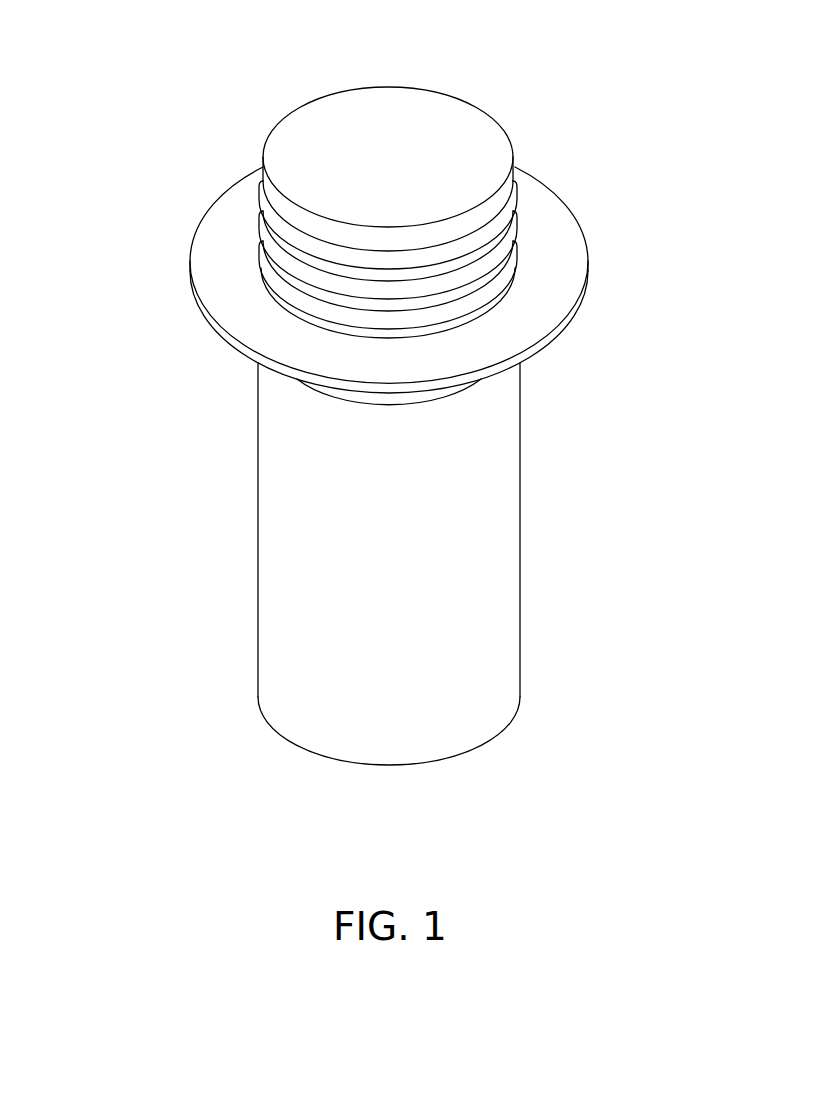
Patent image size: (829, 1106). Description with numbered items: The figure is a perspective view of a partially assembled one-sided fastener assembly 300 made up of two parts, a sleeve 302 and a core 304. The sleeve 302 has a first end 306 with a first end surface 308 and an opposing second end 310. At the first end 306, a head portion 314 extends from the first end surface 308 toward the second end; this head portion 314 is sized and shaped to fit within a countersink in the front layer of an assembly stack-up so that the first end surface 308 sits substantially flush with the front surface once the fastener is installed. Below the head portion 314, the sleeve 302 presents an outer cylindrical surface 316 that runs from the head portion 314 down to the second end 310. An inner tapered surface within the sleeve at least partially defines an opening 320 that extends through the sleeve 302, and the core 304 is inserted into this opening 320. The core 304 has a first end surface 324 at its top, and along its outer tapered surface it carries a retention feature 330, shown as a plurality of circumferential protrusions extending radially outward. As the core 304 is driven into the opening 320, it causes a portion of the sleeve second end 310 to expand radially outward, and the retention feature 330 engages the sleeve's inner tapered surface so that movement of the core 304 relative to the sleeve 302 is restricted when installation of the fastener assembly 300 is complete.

The fastener assembly 300 is at (168, 103).
The sleeve 302 is at (507, 588).
The core 304 is at (490, 140).
The first end 306 is at (188, 328).
The first end surface 308 is at (583, 252).
The second end 310 is at (545, 700).
The head portion 314 is at (548, 328).
The outer cylindrical surface 316 is at (258, 578).
The opening 320 is at (310, 325).
The first end surface 324 is at (336, 108).
The retention feature 330 is at (262, 190).